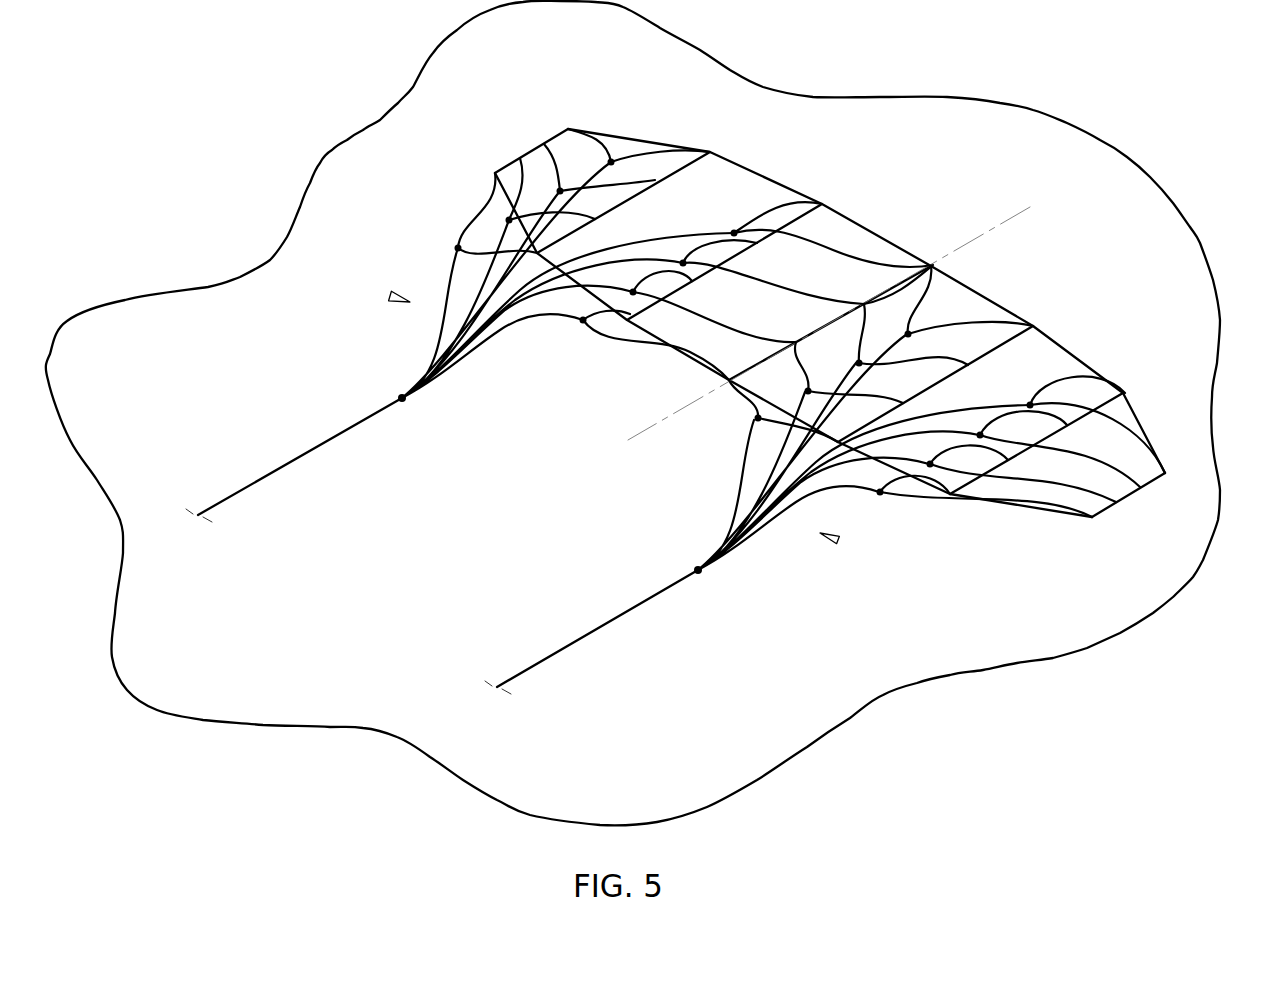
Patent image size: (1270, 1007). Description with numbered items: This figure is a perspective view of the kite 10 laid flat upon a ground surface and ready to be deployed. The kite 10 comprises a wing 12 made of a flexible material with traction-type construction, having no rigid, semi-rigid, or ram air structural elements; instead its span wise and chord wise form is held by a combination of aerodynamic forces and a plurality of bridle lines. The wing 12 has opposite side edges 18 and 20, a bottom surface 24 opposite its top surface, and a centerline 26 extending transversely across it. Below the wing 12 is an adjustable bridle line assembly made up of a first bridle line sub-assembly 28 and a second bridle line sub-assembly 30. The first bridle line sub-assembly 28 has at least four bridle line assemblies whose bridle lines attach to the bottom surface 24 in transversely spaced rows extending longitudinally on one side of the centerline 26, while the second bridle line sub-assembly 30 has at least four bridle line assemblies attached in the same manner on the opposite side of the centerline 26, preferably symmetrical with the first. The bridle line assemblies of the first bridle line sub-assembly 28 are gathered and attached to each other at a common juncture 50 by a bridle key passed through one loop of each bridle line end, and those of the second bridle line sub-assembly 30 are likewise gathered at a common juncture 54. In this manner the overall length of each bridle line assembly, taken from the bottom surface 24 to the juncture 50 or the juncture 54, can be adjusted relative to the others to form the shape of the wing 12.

The kite 10 is at (833, 130).
The wing 12 is at (1103, 366).
The side edge 18 is at (568, 130).
The side edge 20 is at (1103, 514).
The bottom surface 24 is at (1053, 355).
The centerline 26 is at (1013, 216).
The first bridle line sub-assembly 28 is at (392, 296).
The second bridle line sub-assembly 30 is at (840, 540).
The common juncture 50 is at (403, 400).
The common juncture 54 is at (699, 573).